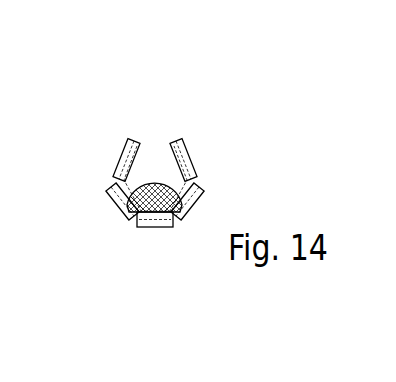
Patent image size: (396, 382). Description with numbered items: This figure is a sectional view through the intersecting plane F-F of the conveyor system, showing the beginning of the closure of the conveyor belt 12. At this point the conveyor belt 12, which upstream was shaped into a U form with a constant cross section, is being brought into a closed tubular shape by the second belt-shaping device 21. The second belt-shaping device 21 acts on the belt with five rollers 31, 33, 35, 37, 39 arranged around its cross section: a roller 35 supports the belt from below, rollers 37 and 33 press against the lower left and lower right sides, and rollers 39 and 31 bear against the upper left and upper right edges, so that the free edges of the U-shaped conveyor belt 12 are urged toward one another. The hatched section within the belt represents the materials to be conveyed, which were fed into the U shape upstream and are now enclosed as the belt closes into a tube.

The second belt-shaping device 21 is at (115, 129).
The conveyor belt 12 is at (166, 146).
The roller 39 is at (113, 168).
The roller 31 is at (192, 165).
The roller 37 is at (117, 194).
The roller 33 is at (193, 196).
The roller 35 is at (160, 229).